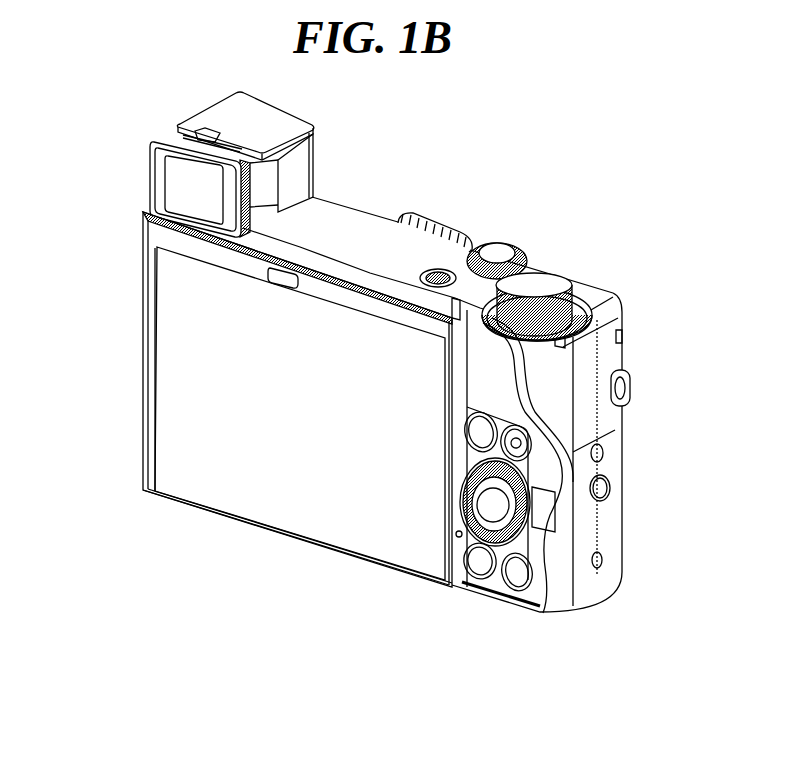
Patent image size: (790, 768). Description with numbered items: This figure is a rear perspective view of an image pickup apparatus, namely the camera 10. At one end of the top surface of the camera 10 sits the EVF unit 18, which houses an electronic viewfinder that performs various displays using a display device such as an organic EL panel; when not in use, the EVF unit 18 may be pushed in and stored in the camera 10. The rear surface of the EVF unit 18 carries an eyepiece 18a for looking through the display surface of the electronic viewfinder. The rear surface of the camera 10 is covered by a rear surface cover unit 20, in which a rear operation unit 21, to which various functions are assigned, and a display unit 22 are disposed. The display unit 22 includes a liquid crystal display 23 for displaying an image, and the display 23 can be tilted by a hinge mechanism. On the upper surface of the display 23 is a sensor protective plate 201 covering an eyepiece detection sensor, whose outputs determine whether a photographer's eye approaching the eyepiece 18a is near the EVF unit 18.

The camera 10 is at (620, 278).
The EVF unit 18 is at (293, 165).
The eyepiece 18a is at (188, 195).
The rear surface cover unit 20 is at (553, 523).
The rear operation unit 21 is at (543, 613).
The display unit 22 is at (143, 432).
The liquid crystal display 23 is at (228, 475).
The sensor protective plate 201 is at (278, 280).